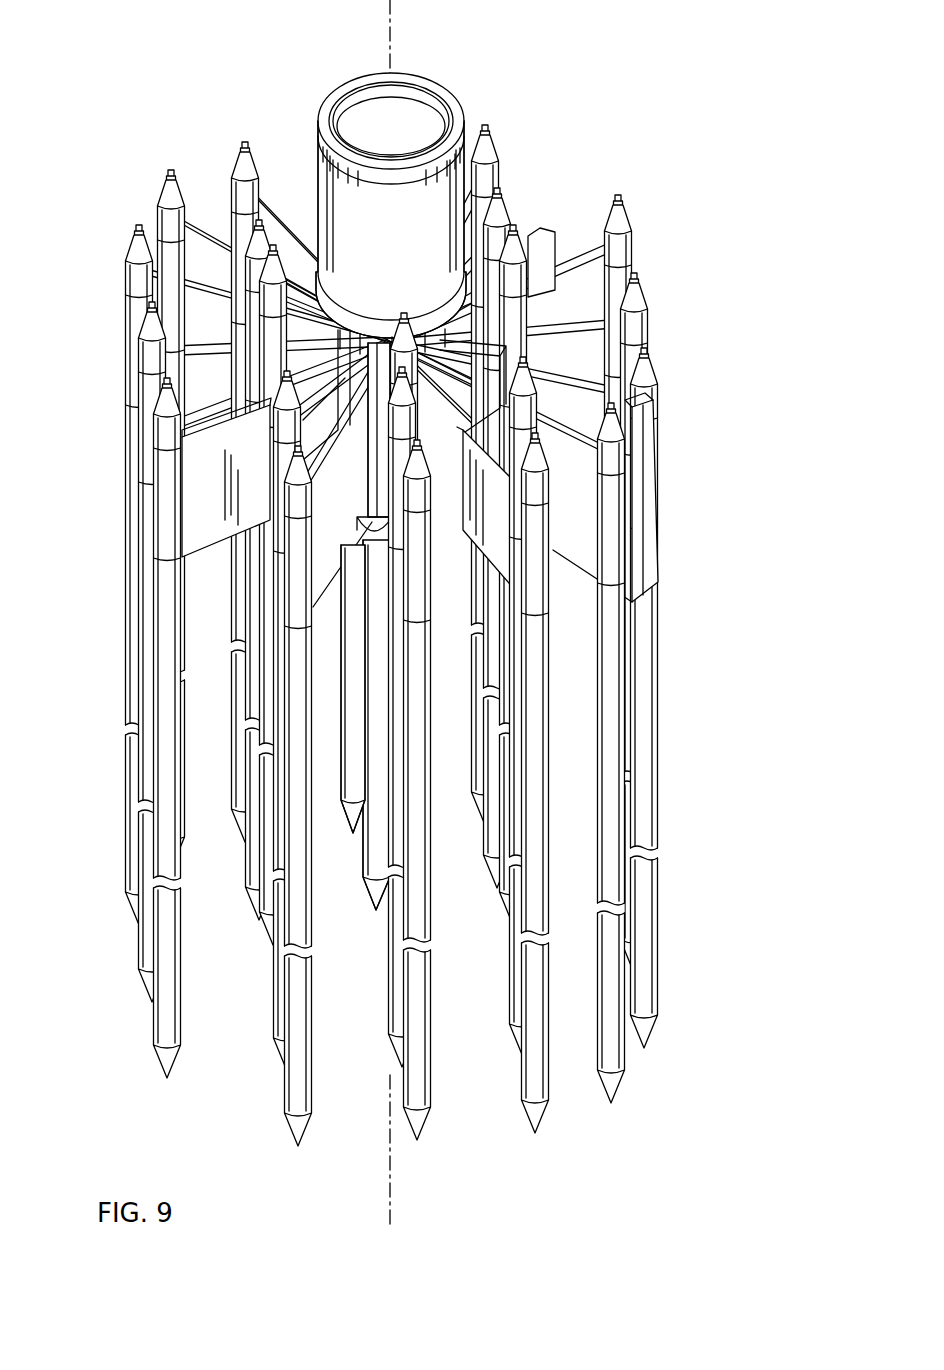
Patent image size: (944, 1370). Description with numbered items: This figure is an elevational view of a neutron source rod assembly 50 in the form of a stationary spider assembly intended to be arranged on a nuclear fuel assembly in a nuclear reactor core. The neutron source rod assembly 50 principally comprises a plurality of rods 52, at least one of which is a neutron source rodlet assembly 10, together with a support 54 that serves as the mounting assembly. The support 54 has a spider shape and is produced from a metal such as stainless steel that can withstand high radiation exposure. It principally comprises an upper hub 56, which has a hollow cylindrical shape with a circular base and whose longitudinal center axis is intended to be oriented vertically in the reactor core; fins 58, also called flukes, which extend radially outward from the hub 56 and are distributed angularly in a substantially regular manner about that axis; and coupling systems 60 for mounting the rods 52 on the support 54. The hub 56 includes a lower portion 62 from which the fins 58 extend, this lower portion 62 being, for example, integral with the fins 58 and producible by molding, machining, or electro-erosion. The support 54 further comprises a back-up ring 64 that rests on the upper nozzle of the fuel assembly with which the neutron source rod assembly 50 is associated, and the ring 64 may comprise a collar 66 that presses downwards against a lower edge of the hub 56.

The neutron source rodlet assembly 10 is at (430, 1025).
The neutron source rod assembly 50 is at (518, 133).
The rods 52 is at (660, 862).
The support 54 is at (566, 215).
The upper hub 56 is at (310, 128).
The fins 58 is at (197, 420).
The coupling systems 60 is at (313, 550).
The lower portion 62 is at (382, 345).
The back-up ring 64 is at (372, 648).
The collar 66 is at (378, 556).